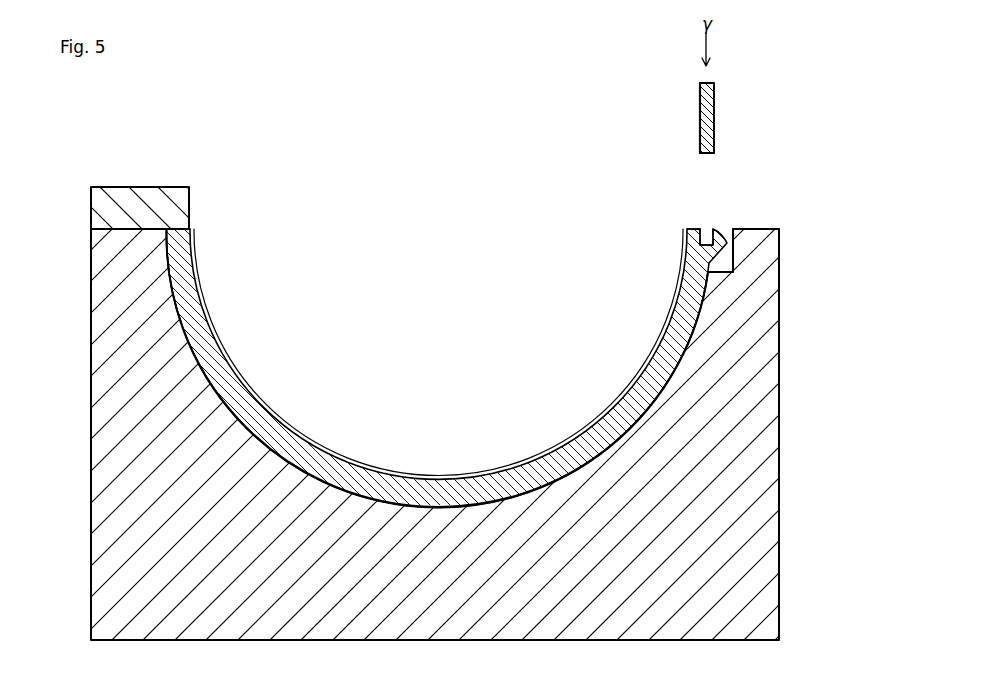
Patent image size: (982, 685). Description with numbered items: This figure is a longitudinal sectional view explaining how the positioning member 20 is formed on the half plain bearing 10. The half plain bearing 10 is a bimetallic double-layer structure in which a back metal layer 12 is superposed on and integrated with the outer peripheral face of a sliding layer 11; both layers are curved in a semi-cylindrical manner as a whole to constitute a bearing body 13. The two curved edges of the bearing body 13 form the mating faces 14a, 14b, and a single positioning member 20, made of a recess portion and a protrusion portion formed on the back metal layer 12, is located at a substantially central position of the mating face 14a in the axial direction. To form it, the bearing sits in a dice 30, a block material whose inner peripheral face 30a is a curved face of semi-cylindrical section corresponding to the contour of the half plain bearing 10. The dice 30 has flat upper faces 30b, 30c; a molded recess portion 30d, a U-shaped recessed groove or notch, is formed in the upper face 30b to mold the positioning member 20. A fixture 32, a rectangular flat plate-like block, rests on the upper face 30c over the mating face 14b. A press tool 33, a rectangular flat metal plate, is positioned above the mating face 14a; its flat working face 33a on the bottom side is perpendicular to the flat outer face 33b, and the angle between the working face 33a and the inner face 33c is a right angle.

The half plain bearing 10 is at (491, 339).
The sliding layer 11 is at (298, 440).
The back metal layer 12 is at (333, 458).
The bearing body 13 is at (491, 366).
The mating face 14a is at (692, 225).
The mating face 14b is at (188, 222).
The positioning member 20 is at (711, 226).
The dice 30 is at (772, 463).
The inner peripheral face 30a is at (180, 277).
The upper face 30b is at (767, 225).
The upper face 30c is at (104, 218).
The molded recess portion 30d is at (728, 230).
The fixture 32 is at (152, 186).
The press tool 33 is at (718, 92).
The working face 33a is at (708, 160).
The outer face 33b is at (716, 119).
The inner face 33c is at (699, 118).